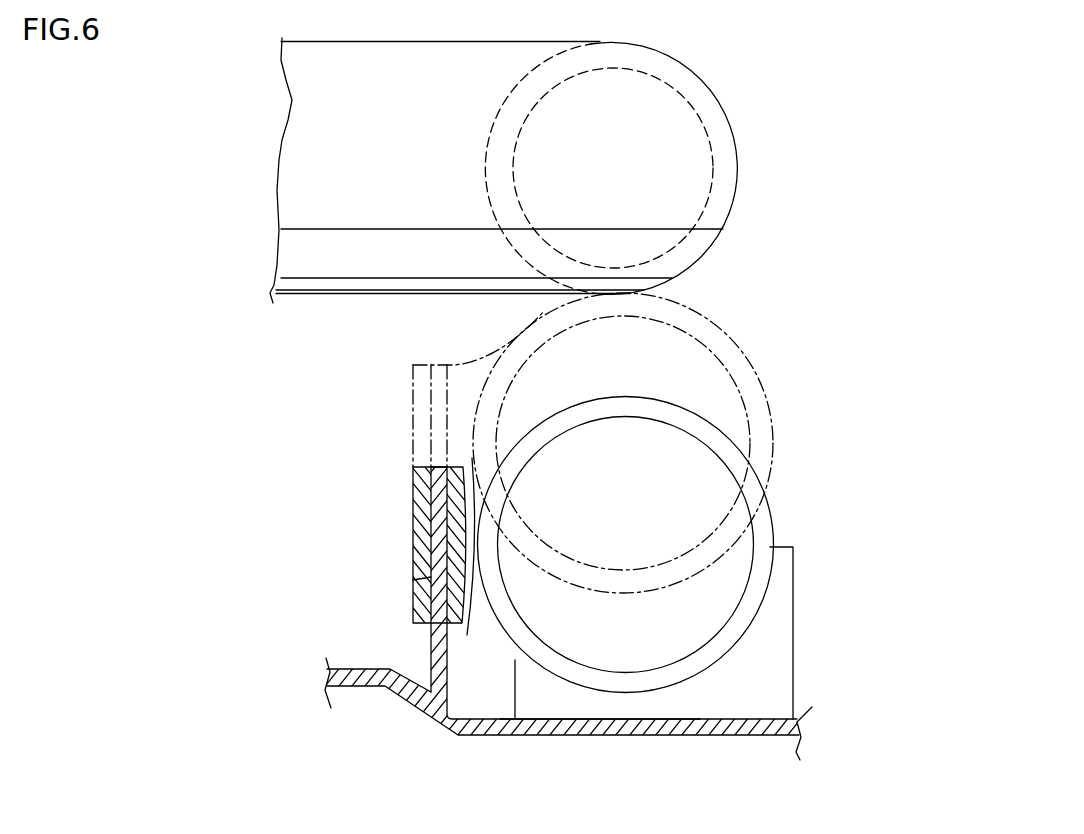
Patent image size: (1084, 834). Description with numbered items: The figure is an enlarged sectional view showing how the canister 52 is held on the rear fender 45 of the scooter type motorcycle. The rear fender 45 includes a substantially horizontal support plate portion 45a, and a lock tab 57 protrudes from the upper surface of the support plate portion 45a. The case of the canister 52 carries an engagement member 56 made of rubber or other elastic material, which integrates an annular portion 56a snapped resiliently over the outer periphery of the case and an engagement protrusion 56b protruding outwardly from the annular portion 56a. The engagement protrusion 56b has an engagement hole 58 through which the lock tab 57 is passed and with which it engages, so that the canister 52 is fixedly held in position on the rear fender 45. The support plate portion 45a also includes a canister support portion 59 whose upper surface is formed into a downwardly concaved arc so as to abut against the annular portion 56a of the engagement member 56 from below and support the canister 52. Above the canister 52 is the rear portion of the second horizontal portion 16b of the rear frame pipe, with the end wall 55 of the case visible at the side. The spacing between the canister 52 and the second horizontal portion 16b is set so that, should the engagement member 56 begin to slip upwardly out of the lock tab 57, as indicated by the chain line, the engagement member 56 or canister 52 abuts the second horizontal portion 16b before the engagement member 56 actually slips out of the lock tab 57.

The second horizontal portion 16b is at (723, 150).
The end wall 55 is at (733, 557).
The engagement member 56 is at (471, 463).
The annular portion 56a is at (716, 442).
The engagement protrusion 56b is at (412, 538).
The lock tab 57 is at (437, 468).
The engagement hole 58 is at (413, 580).
The rear fender 45 is at (369, 666).
The support plate portion 45a is at (573, 718).
The canister 52 is at (521, 632).
The canister support portion 59 is at (783, 638).